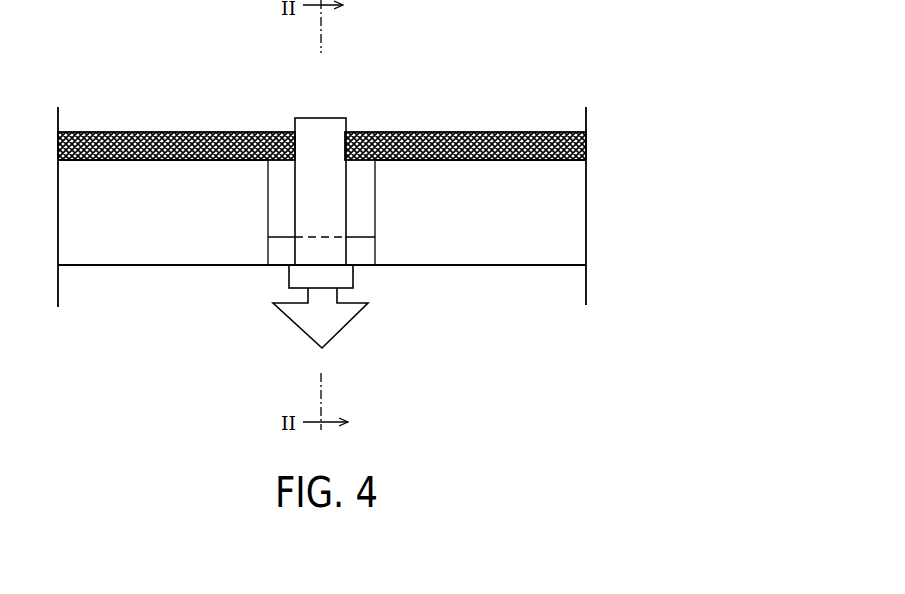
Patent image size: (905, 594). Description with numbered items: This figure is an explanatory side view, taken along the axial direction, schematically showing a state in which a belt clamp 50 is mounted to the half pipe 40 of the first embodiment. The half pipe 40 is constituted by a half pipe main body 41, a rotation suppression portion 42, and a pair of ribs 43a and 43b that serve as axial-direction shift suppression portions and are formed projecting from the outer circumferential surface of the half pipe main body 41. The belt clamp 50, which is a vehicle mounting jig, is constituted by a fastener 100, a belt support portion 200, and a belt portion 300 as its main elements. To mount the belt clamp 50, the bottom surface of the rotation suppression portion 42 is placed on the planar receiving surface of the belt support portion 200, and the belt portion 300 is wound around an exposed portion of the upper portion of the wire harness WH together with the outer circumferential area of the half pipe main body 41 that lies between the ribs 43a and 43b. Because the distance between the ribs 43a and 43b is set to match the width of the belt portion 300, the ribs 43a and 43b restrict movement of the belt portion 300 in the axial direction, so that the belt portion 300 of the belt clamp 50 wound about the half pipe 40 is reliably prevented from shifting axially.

The half pipe 40 is at (130, 272).
The half pipe main body 41 is at (521, 250).
The rotation suppression portion 42 is at (283, 250).
The rib 43a is at (283, 210).
The rib 43b is at (362, 207).
The belt clamp 50 is at (355, 165).
The fastener 100 is at (346, 325).
The belt support portion 200 is at (346, 281).
The belt portion 300 is at (325, 128).
The wire harness WH is at (521, 144).